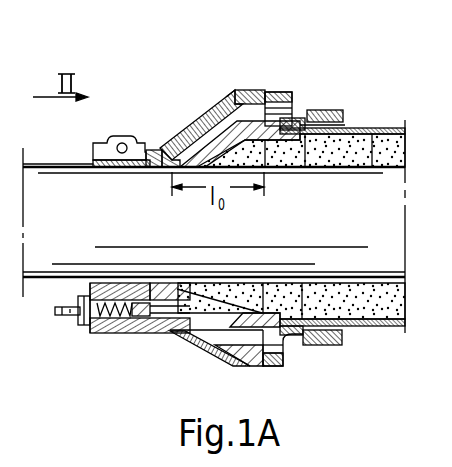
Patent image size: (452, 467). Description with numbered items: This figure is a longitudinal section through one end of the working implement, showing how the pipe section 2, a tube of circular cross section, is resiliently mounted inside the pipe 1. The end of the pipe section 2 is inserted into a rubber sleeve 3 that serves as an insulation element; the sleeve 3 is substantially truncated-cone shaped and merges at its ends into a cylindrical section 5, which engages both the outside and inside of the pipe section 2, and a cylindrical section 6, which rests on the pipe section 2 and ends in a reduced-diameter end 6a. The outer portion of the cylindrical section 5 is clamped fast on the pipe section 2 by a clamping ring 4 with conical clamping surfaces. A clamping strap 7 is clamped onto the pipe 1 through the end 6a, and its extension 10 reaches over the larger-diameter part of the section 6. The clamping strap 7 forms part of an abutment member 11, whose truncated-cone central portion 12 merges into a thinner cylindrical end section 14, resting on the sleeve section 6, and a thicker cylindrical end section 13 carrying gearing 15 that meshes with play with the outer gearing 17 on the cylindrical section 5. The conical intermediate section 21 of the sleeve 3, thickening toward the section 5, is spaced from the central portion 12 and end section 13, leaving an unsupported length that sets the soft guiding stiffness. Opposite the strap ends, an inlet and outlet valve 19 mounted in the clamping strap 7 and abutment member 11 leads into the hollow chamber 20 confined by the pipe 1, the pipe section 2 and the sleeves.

The pipe 1 is at (370, 150).
The pipe section 2 is at (382, 327).
The sleeve 3 is at (290, 113).
The clamping ring 4 is at (332, 345).
The cylindrical section 5 is at (299, 124).
The cylindrical section 6 is at (146, 150).
The end of reduced outer diameter 6a is at (115, 142).
The clamping strap 7 is at (98, 150).
The extension 10 is at (155, 149).
The abutment member 11 is at (217, 86).
The truncated cone shaped central portion 12 is at (202, 122).
The cylindrical end section 13 is at (250, 89).
The cylindrical end section 14 is at (171, 140).
The gearing 15 is at (273, 90).
The outer gearing 17 is at (272, 367).
The inlet and outlet valve 19 is at (97, 334).
The hollow chamber 20 is at (393, 140).
The conically extending intermediate section 21 is at (233, 89).